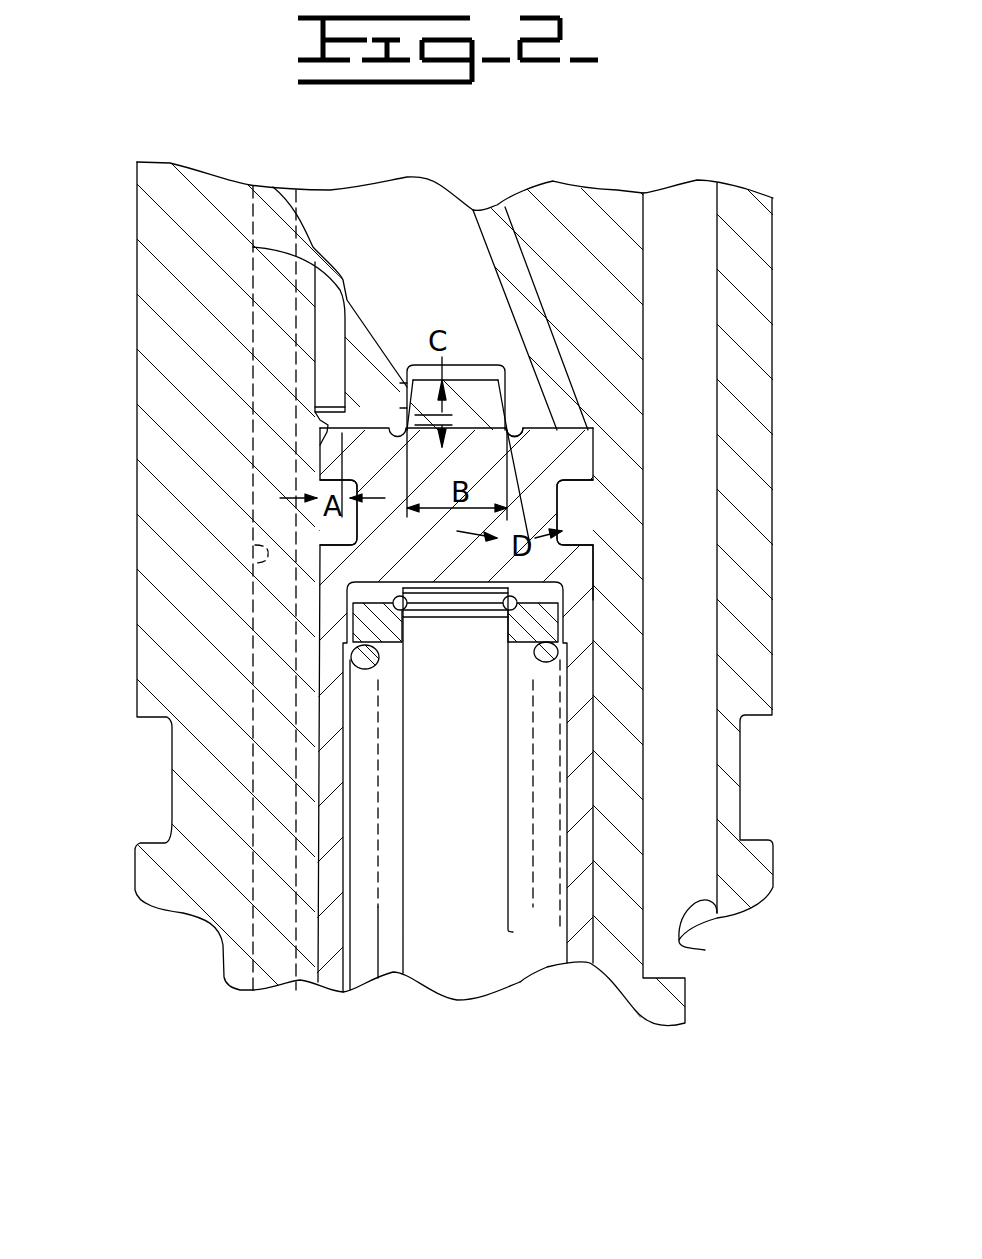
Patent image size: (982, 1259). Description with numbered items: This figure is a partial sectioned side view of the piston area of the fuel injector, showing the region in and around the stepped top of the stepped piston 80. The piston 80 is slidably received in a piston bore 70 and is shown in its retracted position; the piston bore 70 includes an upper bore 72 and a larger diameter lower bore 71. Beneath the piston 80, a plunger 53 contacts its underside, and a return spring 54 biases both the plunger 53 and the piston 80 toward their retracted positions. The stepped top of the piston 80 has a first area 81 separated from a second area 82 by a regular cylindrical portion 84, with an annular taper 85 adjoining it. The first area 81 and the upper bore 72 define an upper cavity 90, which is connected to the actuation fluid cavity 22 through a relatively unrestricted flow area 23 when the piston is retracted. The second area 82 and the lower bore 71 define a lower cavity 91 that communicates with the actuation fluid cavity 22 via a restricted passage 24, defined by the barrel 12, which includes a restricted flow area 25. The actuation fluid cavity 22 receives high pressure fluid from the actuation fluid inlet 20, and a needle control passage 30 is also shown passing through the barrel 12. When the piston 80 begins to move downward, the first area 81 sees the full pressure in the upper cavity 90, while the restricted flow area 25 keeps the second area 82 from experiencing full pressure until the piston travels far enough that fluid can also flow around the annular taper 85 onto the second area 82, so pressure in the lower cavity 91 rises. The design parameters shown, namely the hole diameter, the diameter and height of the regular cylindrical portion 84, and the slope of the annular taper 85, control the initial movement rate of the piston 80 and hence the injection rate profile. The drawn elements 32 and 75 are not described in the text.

The barrel 12 is at (228, 690).
The actuation fluid inlet 20 is at (705, 950).
The actuation fluid cavity 22 is at (356, 231).
The relatively unrestricted flow area 23 is at (406, 311).
The restricted passage 24 is at (253, 247).
The restricted flow area 25 is at (322, 425).
The needle control passage 30 is at (265, 560).
The arm 32 is at (530, 265).
The plunger 53 is at (510, 960).
The return spring 54 is at (562, 960).
The piston bore 70 is at (593, 515).
The lower bore 71 is at (562, 462).
The upper bore 72 is at (503, 396).
The notch 75 is at (593, 453).
The stepped piston 80 is at (318, 592).
The first area 81 is at (455, 370).
The second area 82 is at (352, 428).
The regular cylindrical portion 84 is at (400, 408).
The annular taper 85 is at (400, 383).
The upper cavity 90 is at (480, 372).
The lower cavity 91 is at (327, 467).